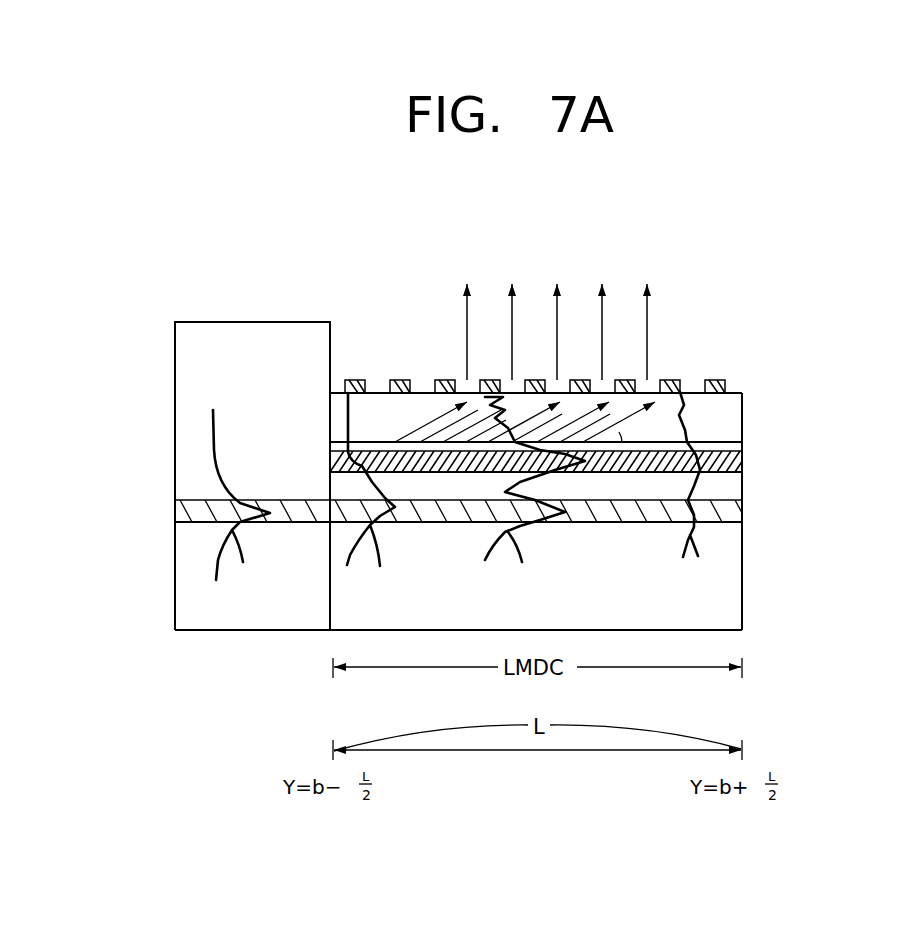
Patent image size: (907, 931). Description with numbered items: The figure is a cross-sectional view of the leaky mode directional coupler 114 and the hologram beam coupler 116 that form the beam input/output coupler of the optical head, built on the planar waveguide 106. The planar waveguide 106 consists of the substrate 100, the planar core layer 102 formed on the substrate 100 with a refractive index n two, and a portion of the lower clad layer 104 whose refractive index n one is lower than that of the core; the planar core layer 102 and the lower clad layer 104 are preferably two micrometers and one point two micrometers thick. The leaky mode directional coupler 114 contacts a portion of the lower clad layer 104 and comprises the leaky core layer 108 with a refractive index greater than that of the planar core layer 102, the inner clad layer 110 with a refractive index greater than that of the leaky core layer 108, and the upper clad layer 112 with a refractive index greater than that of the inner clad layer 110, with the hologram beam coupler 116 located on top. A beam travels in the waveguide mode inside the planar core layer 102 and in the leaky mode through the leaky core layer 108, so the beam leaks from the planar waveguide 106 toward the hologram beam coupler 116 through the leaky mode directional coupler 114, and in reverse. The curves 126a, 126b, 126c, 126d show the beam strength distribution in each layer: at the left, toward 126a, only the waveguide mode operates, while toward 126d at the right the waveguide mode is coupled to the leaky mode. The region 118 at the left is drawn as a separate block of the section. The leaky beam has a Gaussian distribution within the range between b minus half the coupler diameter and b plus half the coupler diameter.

The substrate 100 is at (175, 578).
The planar core layer 102 is at (175, 512).
The lower clad layer 104 is at (733, 487).
The planar waveguide 106 is at (824, 483).
The leaky core layer 108 is at (733, 461).
The inner clad layer 110 is at (733, 440).
The upper clad layer 112 is at (733, 407).
The leaky mode directional coupler (LMDC) 114 is at (824, 403).
The hologram beam coupler 116 is at (727, 381).
The light source region 118 is at (175, 444).
The beam strength distribution in waveguide mode 126a is at (243, 562).
The beam strength distribution 126b is at (380, 566).
The beam strength distribution 126c is at (522, 562).
The beam strength distribution in coupled waveguide and leaky modes 126d is at (698, 556).